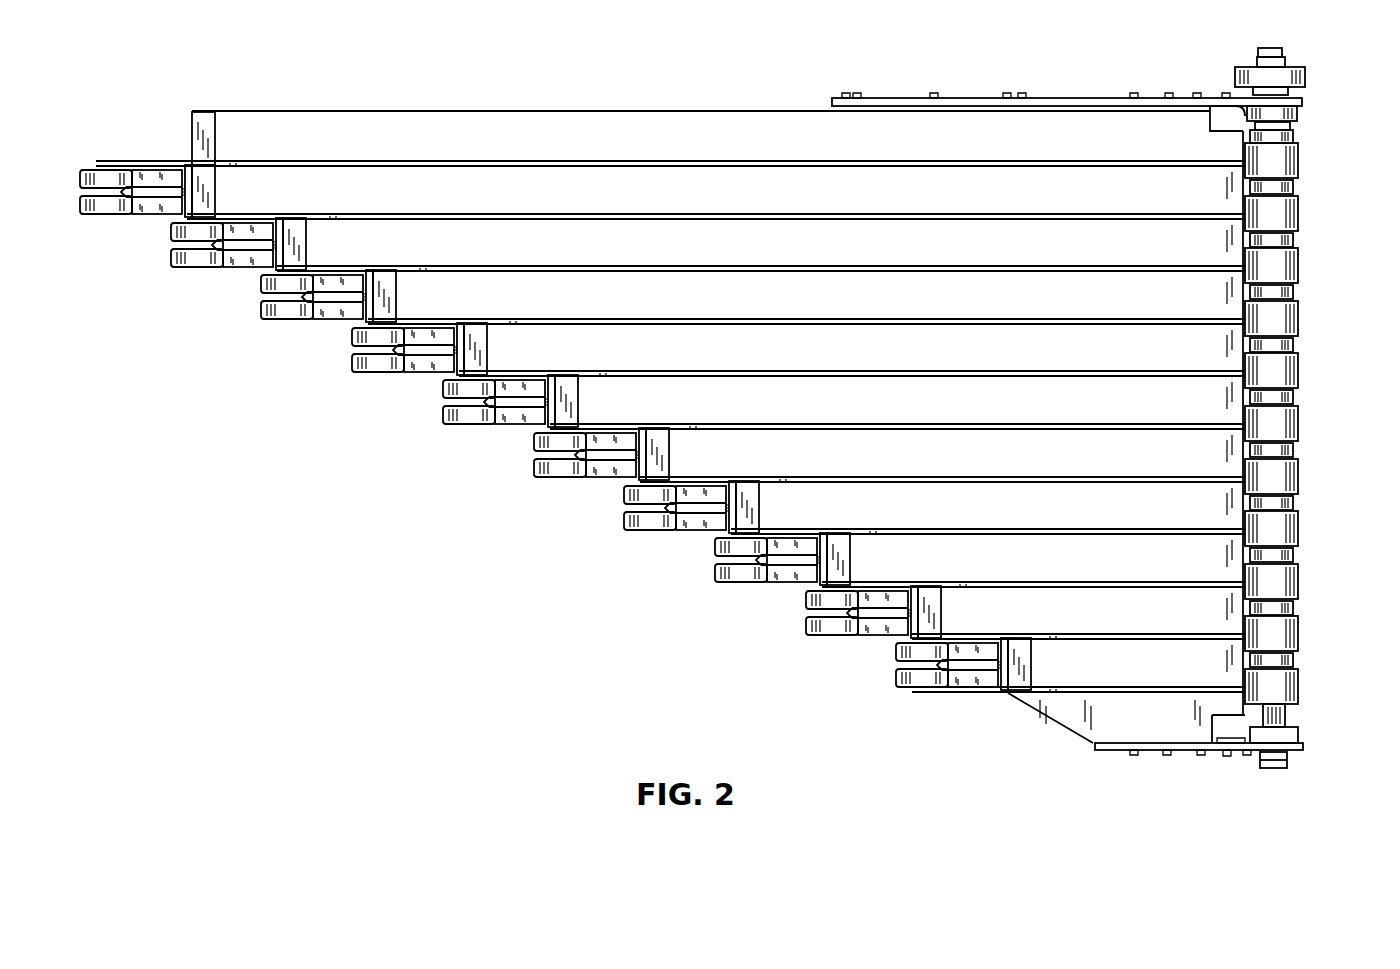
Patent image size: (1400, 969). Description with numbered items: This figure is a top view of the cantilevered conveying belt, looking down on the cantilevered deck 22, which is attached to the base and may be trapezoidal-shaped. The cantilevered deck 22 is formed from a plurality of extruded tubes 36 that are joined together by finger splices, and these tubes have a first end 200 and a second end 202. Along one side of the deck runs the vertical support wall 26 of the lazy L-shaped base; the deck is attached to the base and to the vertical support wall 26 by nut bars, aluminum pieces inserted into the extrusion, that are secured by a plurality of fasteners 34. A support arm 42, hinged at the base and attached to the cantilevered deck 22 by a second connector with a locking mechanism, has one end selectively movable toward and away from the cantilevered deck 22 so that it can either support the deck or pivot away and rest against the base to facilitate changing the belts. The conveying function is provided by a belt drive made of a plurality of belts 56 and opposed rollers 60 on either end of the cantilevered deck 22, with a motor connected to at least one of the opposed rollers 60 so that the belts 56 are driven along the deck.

The cantilevered deck 22 is at (748, 122).
The vertical support wall 26 is at (1077, 98).
The extruded tubes 36 is at (313, 243).
The first end 200 is at (392, 293).
The second end 202 is at (1217, 302).
The opposed rollers 60 is at (913, 690).
The belts 56 is at (1045, 667).
The support arm 42 is at (1143, 750).
The fasteners 34 is at (1223, 756).